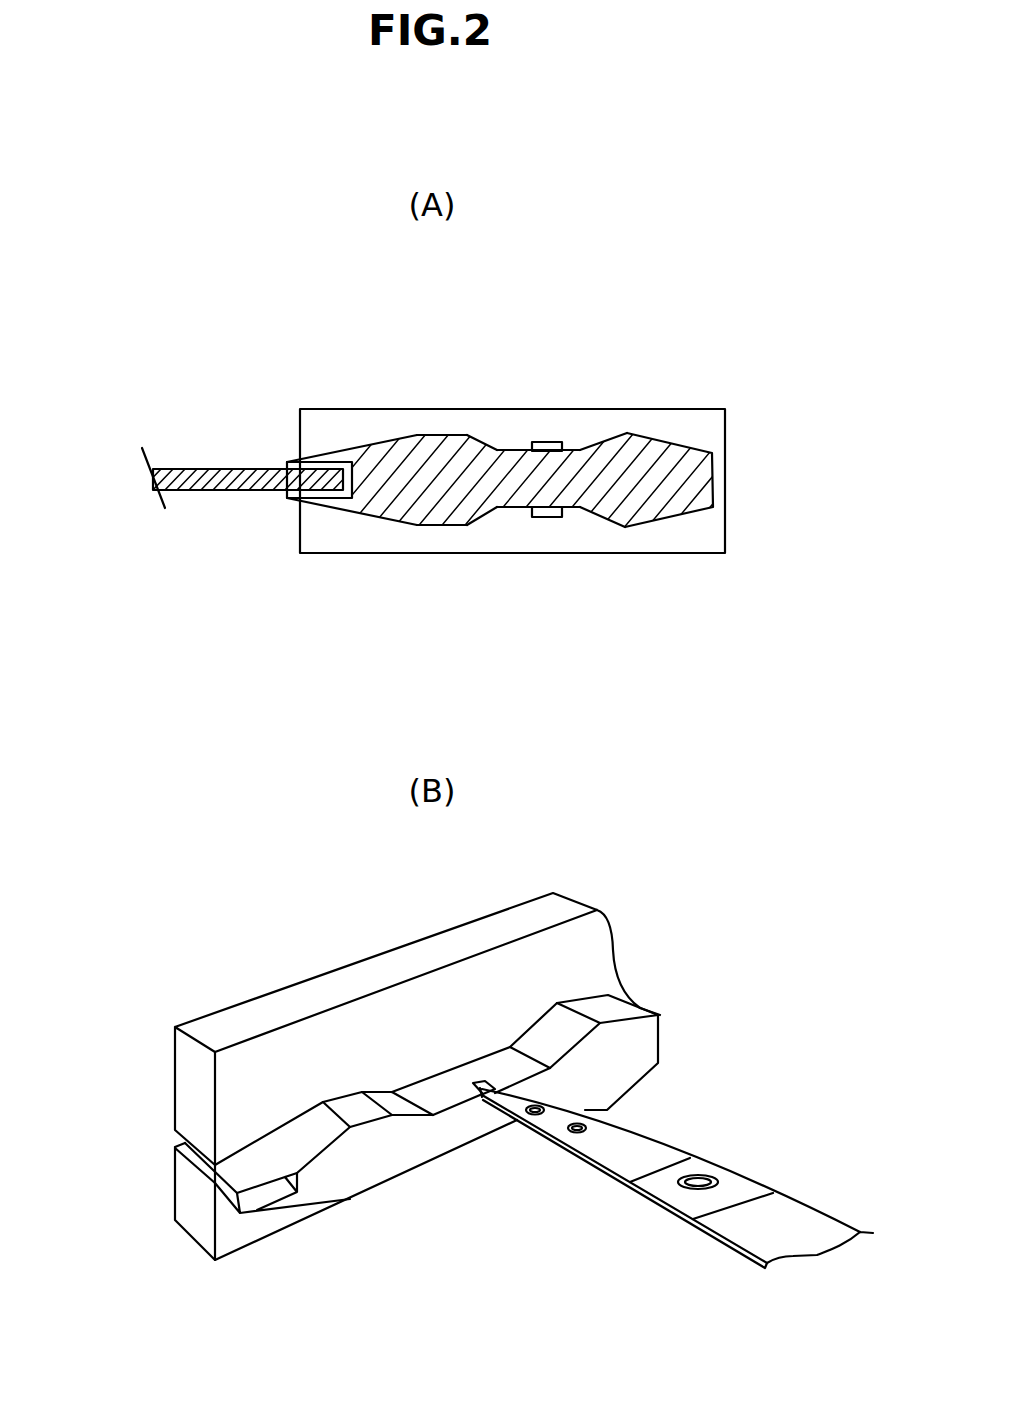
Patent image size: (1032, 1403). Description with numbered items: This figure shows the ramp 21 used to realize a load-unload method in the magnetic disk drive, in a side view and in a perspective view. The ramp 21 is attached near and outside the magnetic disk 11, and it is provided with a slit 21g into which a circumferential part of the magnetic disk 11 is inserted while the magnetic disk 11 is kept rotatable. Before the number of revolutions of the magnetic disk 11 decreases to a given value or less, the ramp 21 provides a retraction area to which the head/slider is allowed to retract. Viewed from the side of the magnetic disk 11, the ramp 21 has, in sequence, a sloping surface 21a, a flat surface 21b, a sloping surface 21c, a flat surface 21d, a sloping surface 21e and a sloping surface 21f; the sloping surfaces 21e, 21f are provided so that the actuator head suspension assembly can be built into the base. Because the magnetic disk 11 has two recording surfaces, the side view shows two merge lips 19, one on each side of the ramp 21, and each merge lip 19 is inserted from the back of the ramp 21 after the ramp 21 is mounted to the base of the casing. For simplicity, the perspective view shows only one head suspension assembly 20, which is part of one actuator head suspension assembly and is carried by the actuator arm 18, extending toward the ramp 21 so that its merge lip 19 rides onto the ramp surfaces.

The magnetic disk 11 is at (195, 469).
The actuator arm 18 is at (723, 1222).
The merge lip 19 is at (545, 442).
The head suspension assembly 20 is at (617, 1155).
The ramp 21 is at (330, 409).
The sloping surface 21a is at (387, 442).
The flat surface 21b is at (432, 435).
The sloping surface 21c is at (488, 445).
The flat surface 21d is at (572, 452).
The sloping surface 21e is at (598, 447).
The sloping surface 21f is at (668, 445).
The slit 21g is at (325, 498).